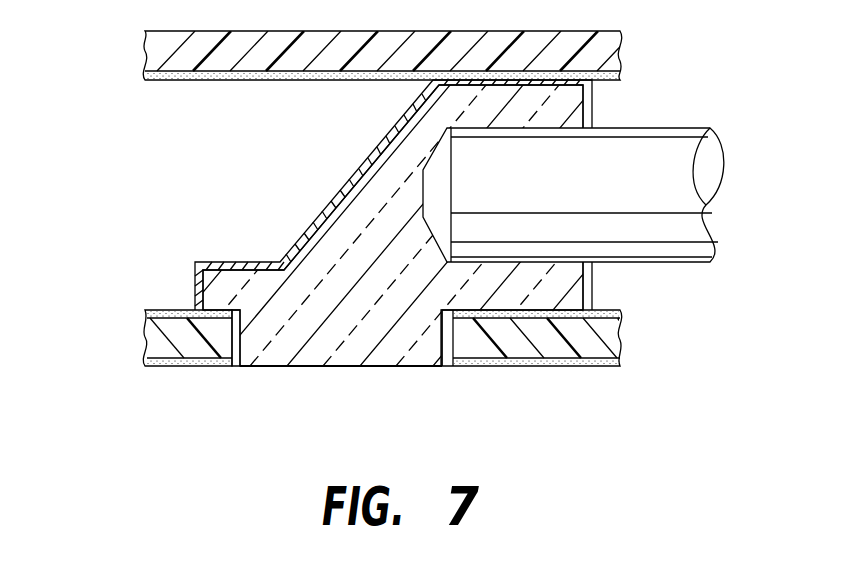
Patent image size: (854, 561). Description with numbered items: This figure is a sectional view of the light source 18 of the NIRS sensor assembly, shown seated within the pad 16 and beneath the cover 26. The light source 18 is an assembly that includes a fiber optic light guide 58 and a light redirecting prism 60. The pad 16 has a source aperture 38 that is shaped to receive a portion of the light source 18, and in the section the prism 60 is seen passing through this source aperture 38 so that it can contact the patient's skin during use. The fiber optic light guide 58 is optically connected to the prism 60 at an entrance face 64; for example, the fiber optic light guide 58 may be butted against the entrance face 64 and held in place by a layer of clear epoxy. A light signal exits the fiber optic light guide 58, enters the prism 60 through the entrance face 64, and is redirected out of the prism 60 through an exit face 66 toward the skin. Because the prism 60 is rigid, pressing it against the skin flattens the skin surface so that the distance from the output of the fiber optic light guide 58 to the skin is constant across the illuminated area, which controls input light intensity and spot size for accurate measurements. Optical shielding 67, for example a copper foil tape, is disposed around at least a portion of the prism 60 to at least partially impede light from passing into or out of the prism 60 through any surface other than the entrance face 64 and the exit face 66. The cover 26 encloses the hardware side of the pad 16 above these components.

The cover 26 is at (143, 63).
The pad 16 is at (142, 331).
The source aperture 38 is at (238, 367).
The optical shielding 67 is at (378, 147).
The entrance face 64 is at (423, 203).
The light source 18 is at (363, 367).
The light redirecting prism 60 is at (400, 341).
The exit face 66 is at (311, 367).
The fiber optic light guide 58 is at (660, 128).